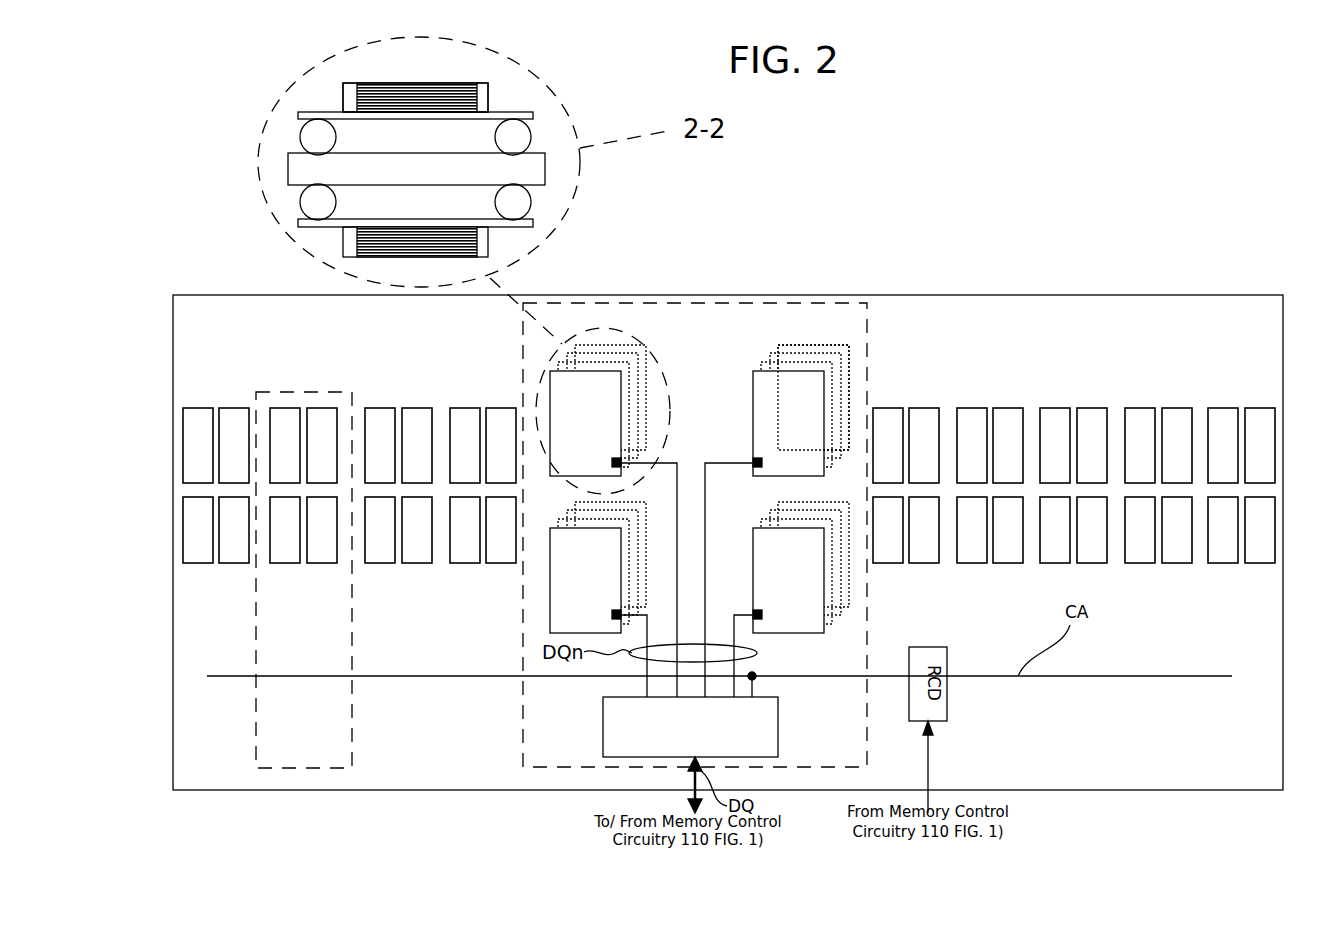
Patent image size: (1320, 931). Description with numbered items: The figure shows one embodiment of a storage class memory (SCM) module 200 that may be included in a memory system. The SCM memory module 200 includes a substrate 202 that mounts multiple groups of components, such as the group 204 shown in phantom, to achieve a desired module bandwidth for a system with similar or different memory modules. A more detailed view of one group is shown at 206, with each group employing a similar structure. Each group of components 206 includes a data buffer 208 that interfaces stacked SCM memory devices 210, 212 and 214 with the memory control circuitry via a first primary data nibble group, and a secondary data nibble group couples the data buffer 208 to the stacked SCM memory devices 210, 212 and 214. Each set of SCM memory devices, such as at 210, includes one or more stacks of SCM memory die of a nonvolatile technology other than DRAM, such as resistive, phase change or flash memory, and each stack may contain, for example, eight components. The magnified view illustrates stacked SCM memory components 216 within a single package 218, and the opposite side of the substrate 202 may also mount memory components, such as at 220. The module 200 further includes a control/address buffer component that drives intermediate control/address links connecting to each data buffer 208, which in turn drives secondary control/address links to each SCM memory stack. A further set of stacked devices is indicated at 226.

The storage class memory (SCM) module 200 is at (1078, 172).
The substrate 202 is at (288, 166).
The group of components 204 is at (307, 391).
The group of components (detailed view) 206 is at (835, 318).
The data buffer 208 is at (600, 578).
The stacked SCM memory devices 210 is at (600, 431).
The stacked SCM memory devices 212 is at (806, 431).
The stacked SCM memory devices 214 is at (806, 578).
The stacked SCM memory components 216 is at (358, 88).
The package 218 is at (489, 108).
The memory components 220 is at (343, 239).
The stacked memory devices 226 is at (815, 377).